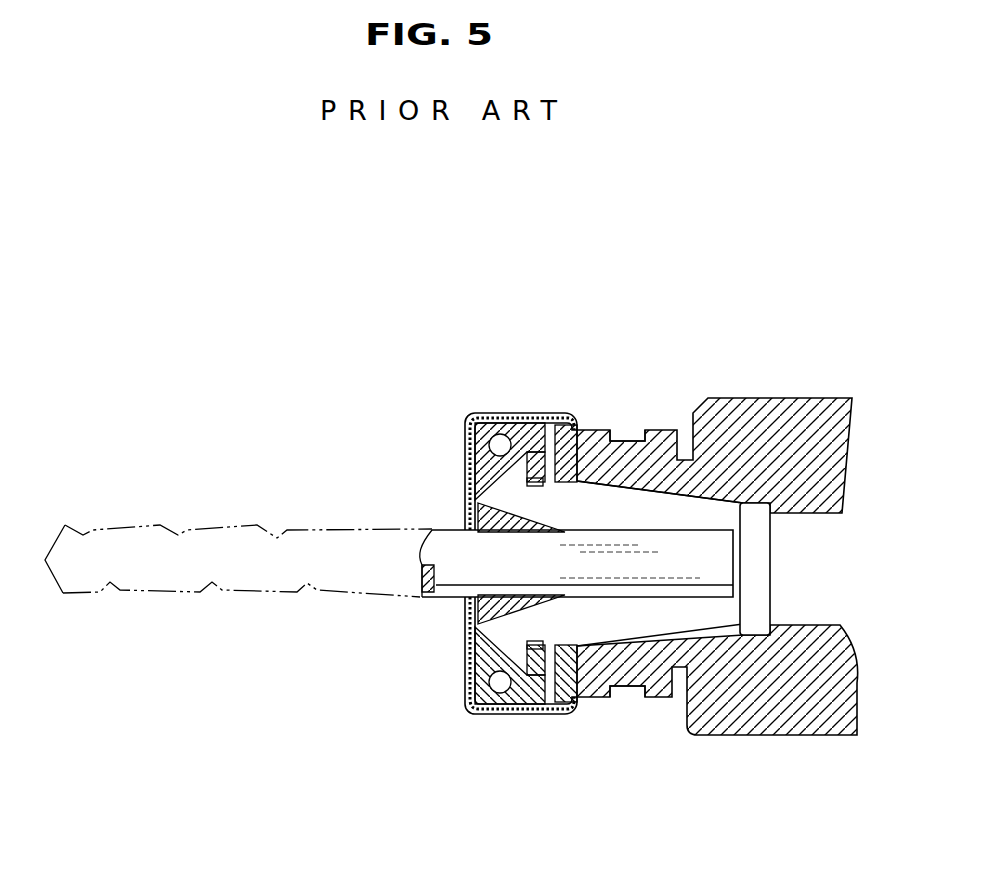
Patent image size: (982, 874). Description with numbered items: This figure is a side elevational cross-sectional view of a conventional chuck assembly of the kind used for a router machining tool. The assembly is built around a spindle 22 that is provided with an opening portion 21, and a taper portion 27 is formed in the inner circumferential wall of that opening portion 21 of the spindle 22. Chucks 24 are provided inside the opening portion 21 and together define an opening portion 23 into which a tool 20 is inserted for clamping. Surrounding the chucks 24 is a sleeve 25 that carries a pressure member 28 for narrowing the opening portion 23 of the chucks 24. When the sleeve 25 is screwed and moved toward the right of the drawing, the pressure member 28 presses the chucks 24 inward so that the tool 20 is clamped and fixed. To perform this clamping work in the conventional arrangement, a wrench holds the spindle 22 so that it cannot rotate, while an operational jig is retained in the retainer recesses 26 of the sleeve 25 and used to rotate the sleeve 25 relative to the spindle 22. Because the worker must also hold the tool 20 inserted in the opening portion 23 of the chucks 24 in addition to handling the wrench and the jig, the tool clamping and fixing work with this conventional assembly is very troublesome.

The tool 20 is at (426, 600).
The opening portion 21 is at (710, 442).
The spindle 22 is at (755, 735).
The opening portion 23 is at (462, 618).
The chucks 24 is at (548, 412).
The sleeve 25 is at (511, 412).
The retainer recesses 26 is at (620, 430).
The taper portion 27 is at (589, 702).
The pressure member 28 is at (465, 467).